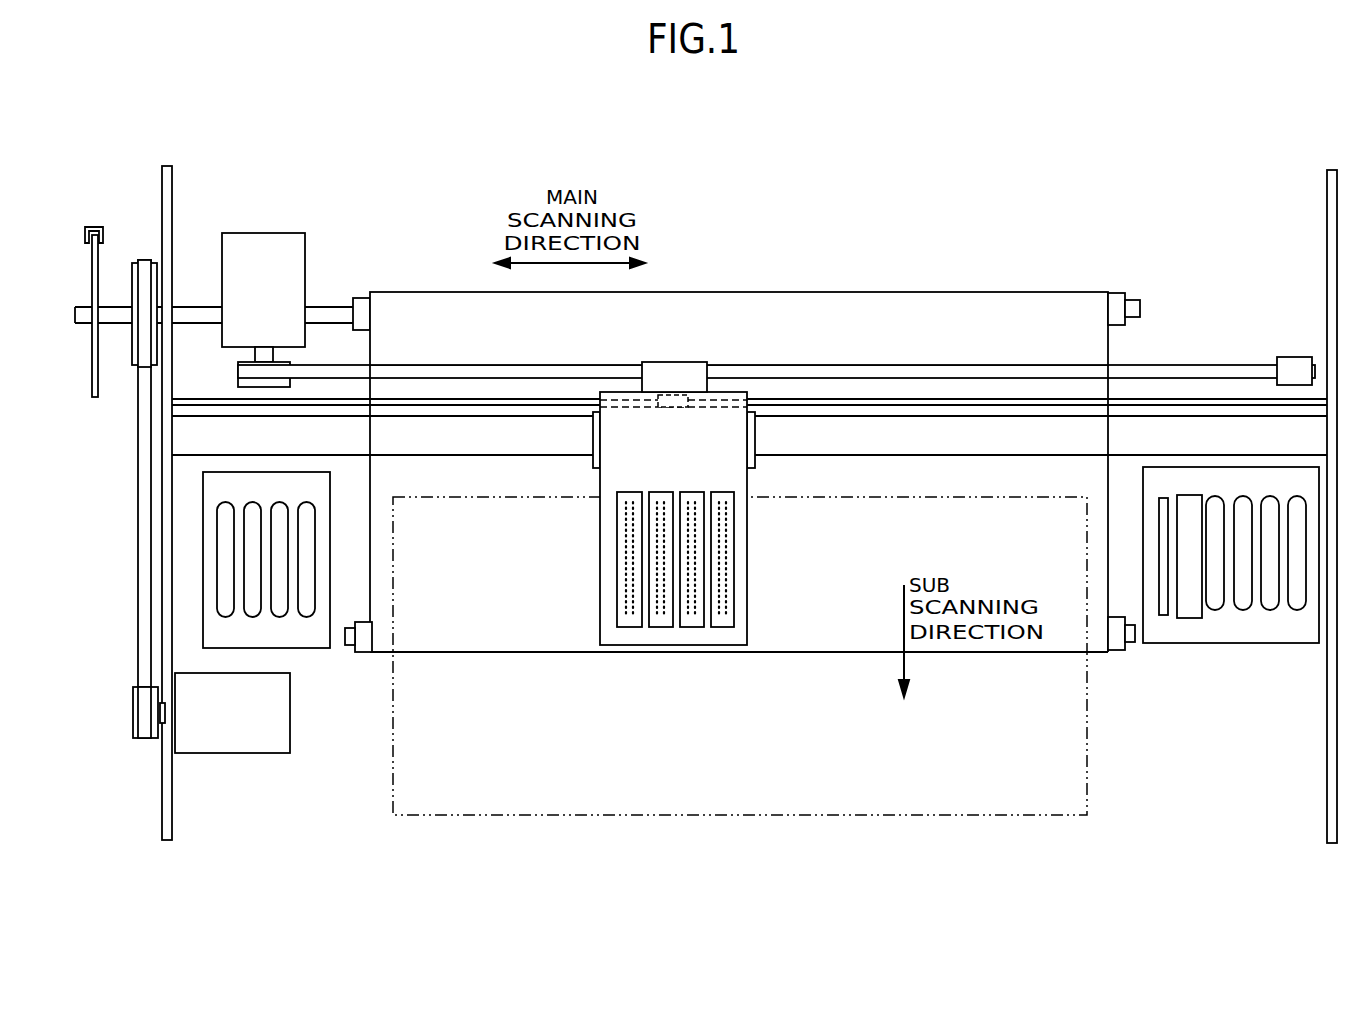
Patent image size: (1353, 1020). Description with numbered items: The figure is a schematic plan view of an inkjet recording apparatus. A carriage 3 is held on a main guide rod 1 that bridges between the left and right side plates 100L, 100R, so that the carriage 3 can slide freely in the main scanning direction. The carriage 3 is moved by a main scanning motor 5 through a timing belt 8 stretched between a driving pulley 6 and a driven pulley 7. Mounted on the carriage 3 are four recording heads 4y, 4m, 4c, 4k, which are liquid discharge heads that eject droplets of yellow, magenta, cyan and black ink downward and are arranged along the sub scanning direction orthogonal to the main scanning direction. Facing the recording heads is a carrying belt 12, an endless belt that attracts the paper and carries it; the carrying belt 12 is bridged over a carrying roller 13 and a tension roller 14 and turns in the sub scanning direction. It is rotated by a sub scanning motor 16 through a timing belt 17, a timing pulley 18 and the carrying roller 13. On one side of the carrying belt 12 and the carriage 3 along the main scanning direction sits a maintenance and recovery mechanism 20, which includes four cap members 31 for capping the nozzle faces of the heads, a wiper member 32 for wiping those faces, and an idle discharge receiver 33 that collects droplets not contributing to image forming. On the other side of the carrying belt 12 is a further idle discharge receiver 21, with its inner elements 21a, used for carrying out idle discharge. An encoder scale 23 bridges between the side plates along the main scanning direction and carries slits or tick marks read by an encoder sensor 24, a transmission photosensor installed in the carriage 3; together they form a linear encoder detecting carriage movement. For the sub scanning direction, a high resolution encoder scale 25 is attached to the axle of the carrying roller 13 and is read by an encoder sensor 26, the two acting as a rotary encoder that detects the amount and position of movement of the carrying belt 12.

The main guide rod 1 is at (1160, 432).
The carriage 3 is at (727, 422).
The recording head 4y is at (627, 622).
The recording head 4m is at (661, 622).
The recording head 4c is at (693, 622).
The recording head 4k is at (722, 622).
The main scanning motor 5 is at (257, 246).
The driving pulley 6 is at (274, 348).
The driven pulley 7 is at (1297, 358).
The timing belt 8 is at (457, 376).
The carrying belt 12 is at (917, 305).
The carrying roller 13 is at (1115, 297).
The tension roller 14 is at (1116, 645).
The sub scanning motor 16 is at (228, 745).
The timing belt 17 is at (143, 500).
The timing pulley 18 is at (151, 265).
The maintenance and recovery mechanism 20 is at (1297, 635).
The idle discharge receiver 21 is at (300, 648).
The ink cartridge 21a is at (220, 598).
The encoder scale 23 is at (973, 400).
The encoder sensor 24 is at (682, 397).
The encoder scale 25 is at (93, 355).
The encoder sensor 26 is at (97, 228).
The cap member 31 is at (1297, 605).
The wiper member 32 is at (1165, 612).
The idle discharge receiver 33 is at (1188, 617).
The side plate 100L is at (167, 166).
The side plate 100R is at (1330, 172).